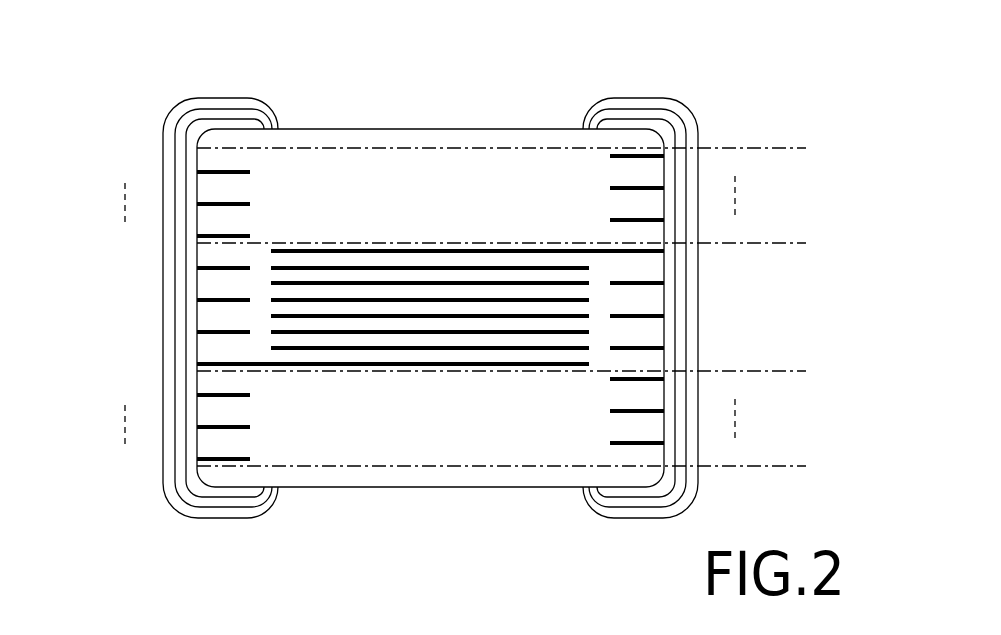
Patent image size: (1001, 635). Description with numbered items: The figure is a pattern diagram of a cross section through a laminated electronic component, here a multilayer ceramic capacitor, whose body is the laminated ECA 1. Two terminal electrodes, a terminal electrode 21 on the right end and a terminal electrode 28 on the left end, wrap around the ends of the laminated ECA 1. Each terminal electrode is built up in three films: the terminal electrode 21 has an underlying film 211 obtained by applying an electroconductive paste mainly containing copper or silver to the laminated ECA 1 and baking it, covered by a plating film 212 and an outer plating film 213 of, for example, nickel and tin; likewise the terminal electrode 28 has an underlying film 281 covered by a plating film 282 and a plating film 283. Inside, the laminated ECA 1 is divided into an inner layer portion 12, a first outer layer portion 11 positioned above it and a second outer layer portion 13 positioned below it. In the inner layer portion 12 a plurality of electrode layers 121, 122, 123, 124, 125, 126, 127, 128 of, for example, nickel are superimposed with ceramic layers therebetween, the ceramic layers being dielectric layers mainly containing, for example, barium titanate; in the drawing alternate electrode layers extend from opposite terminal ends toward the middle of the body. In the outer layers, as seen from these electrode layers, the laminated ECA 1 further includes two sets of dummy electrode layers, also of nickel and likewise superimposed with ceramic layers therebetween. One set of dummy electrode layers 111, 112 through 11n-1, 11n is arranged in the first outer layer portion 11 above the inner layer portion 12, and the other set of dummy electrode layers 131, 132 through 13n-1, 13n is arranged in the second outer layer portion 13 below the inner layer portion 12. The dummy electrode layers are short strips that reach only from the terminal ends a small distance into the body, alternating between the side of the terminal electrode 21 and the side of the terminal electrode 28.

The laminated ECA 1 is at (421, 130).
The first outer layer portion 11 is at (472, 197).
The inner layer portion 12 is at (461, 308).
The second outer layer portion 13 is at (472, 420).
The dummy electrode layer 111 is at (646, 157).
The dummy electrode layer 112 is at (210, 172).
The dummy electrode layer 11n-1 is at (646, 221).
The dummy electrode layer 11n is at (210, 236).
The electrode layer 121 is at (646, 252).
The electrode layer 122 is at (210, 268).
The electrode layer 123 is at (646, 284).
The electrode layer 124 is at (210, 300).
The electrode layer 125 is at (646, 317).
The electrode layer 126 is at (210, 332).
The electrode layer 127 is at (646, 349).
The electrode layer 128 is at (210, 364).
The dummy electrode layer 131 is at (646, 380).
The dummy electrode layer 132 is at (210, 395).
The dummy electrode layer 13n-1 is at (646, 444).
The dummy electrode layer 13n is at (210, 459).
The terminal electrode 21 is at (637, 281).
The underlying film 211 is at (617, 125).
The plating film 212 is at (642, 113).
The plating film 213 is at (663, 100).
The terminal electrode 28 is at (222, 281).
The underlying film 281 is at (243, 125).
The plating film 282 is at (212, 114).
The plating film 283 is at (196, 98).